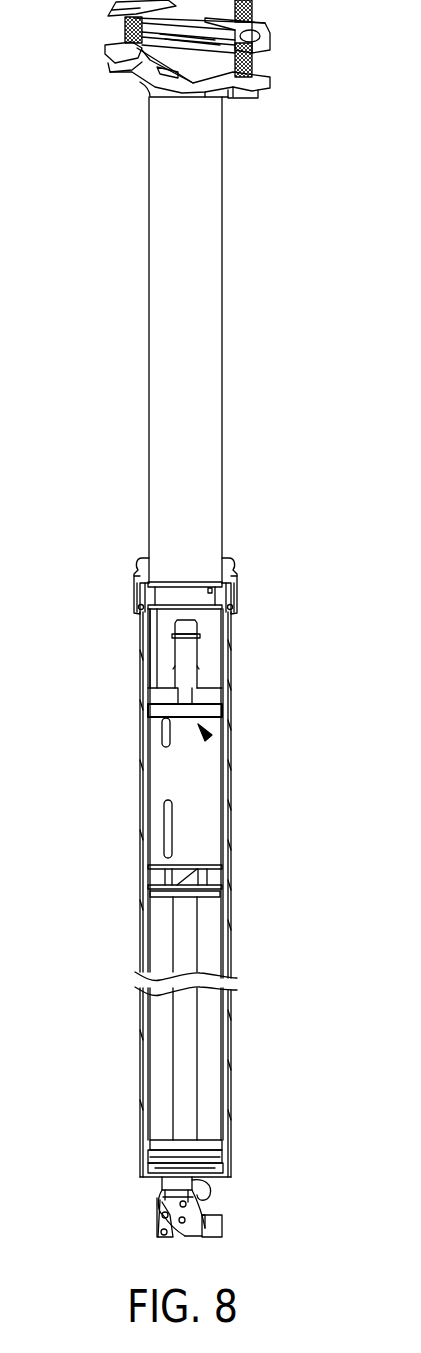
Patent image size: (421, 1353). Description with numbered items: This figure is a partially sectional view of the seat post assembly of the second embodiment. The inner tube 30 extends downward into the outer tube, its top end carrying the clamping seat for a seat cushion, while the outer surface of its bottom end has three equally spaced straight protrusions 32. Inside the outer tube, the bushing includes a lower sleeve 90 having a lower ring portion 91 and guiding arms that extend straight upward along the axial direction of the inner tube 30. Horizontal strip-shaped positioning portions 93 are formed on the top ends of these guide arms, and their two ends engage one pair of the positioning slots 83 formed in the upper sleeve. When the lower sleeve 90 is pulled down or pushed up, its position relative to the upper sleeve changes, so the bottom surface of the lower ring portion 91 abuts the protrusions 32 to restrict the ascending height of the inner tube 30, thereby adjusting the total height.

The inner tube 30 is at (205, 313).
The straight protrusions 32 is at (150, 738).
The positioning slots 83 is at (177, 632).
The lower sleeve 90 is at (222, 762).
The lower ring portion 91 is at (150, 711).
The positioning portions 93 is at (140, 606).